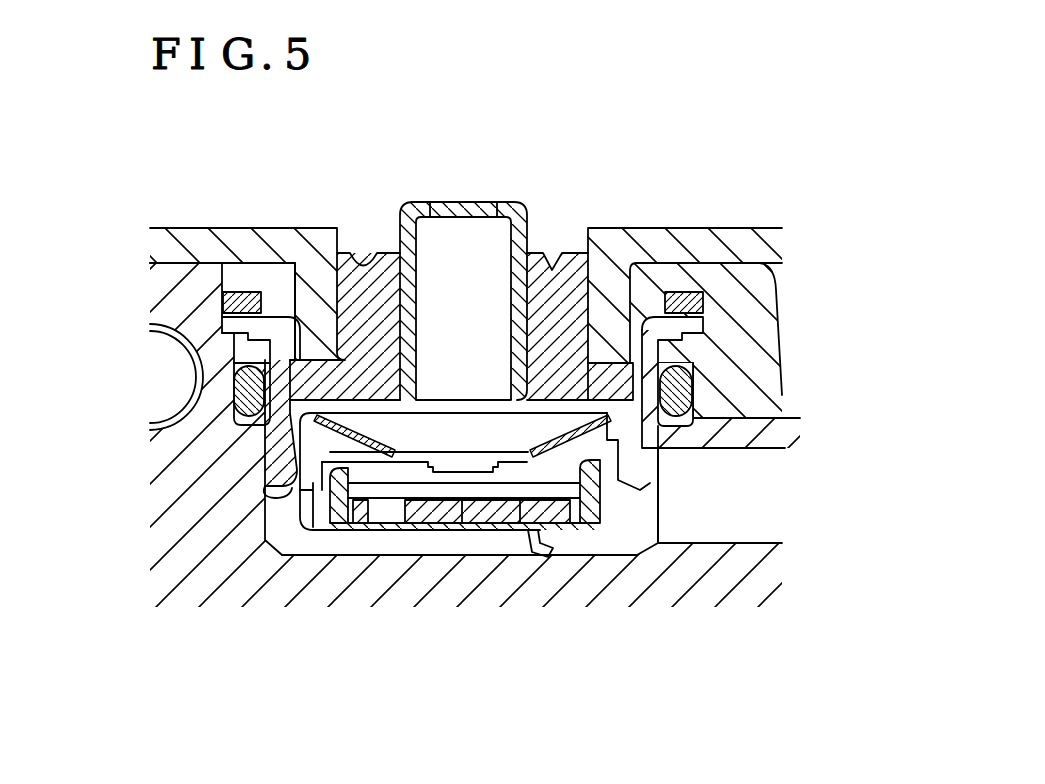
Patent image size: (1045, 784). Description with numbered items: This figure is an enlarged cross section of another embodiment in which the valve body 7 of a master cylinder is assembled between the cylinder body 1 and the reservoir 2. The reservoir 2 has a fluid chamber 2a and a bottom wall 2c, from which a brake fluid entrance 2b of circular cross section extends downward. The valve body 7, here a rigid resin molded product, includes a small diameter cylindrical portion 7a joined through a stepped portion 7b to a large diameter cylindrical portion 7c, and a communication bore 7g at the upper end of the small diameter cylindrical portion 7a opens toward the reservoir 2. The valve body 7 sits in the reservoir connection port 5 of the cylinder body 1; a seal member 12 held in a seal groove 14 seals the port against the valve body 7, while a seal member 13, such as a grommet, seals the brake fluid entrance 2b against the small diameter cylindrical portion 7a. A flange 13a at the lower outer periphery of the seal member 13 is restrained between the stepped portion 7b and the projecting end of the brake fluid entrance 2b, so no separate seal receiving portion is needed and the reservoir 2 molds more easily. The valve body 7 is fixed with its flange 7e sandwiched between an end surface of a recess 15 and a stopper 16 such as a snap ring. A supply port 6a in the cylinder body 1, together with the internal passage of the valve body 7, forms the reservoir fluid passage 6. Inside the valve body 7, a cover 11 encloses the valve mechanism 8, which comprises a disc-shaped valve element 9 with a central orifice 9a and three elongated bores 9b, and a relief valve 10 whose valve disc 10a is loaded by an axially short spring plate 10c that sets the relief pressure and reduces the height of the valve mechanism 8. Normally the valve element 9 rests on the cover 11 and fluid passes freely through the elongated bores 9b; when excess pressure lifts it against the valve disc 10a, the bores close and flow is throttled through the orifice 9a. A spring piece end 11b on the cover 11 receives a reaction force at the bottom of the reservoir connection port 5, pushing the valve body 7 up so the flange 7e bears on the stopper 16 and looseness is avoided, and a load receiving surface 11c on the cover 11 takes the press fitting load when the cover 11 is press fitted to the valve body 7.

The cylinder body 1 is at (177, 308).
The reservoir 2 is at (150, 250).
The fluid chamber 2a is at (648, 180).
The brake fluid entrance 2b is at (343, 252).
The bottom wall 2c is at (257, 247).
The reservoir connection port 5 is at (263, 543).
The reservoir fluid passage 6 is at (743, 523).
The supply port 6a is at (765, 500).
The valve body 7 is at (507, 200).
The small diameter cylindrical portion 7a is at (385, 240).
The stepped portion 7b is at (267, 497).
The large diameter cylindrical portion 7c is at (287, 438).
The flange 7e is at (677, 320).
The communication bore 7g is at (430, 207).
The valve mechanism 8 is at (377, 522).
The valve element 9 is at (398, 538).
The orifice 9a is at (462, 507).
The elongated bores 9b is at (313, 538).
The relief valve 10 is at (483, 576).
The valve disc 10a is at (565, 483).
The spring plate 10c is at (613, 483).
The cover 11 is at (300, 525).
The spring piece end 11b is at (522, 548).
The load receiving surface 11c is at (620, 487).
The seal member 12 is at (697, 405).
The seal member 13 is at (557, 293).
The flange 13a is at (608, 380).
The seal groove 14 is at (693, 435).
The recess 15 is at (677, 337).
The stopper 16 is at (700, 295).